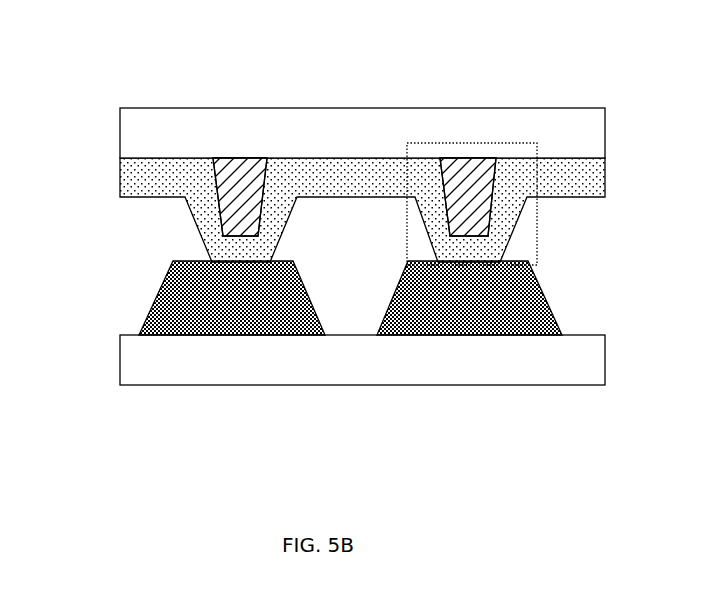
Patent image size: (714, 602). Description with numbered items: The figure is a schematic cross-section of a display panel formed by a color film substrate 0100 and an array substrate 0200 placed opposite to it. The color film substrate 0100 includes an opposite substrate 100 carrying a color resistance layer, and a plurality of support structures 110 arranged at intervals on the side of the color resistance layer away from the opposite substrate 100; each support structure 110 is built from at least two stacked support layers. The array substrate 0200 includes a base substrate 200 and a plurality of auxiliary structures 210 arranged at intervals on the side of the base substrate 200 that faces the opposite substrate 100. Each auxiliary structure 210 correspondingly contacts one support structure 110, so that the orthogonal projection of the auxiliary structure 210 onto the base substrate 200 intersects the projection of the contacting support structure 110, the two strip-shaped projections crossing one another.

The color film substrate 0100 is at (321, 155).
The opposite substrate 100 is at (208, 128).
The support structure 110 is at (422, 142).
The array substrate 0200 is at (321, 364).
The base substrate 200 is at (232, 362).
The auxiliary structure 210 is at (473, 300).